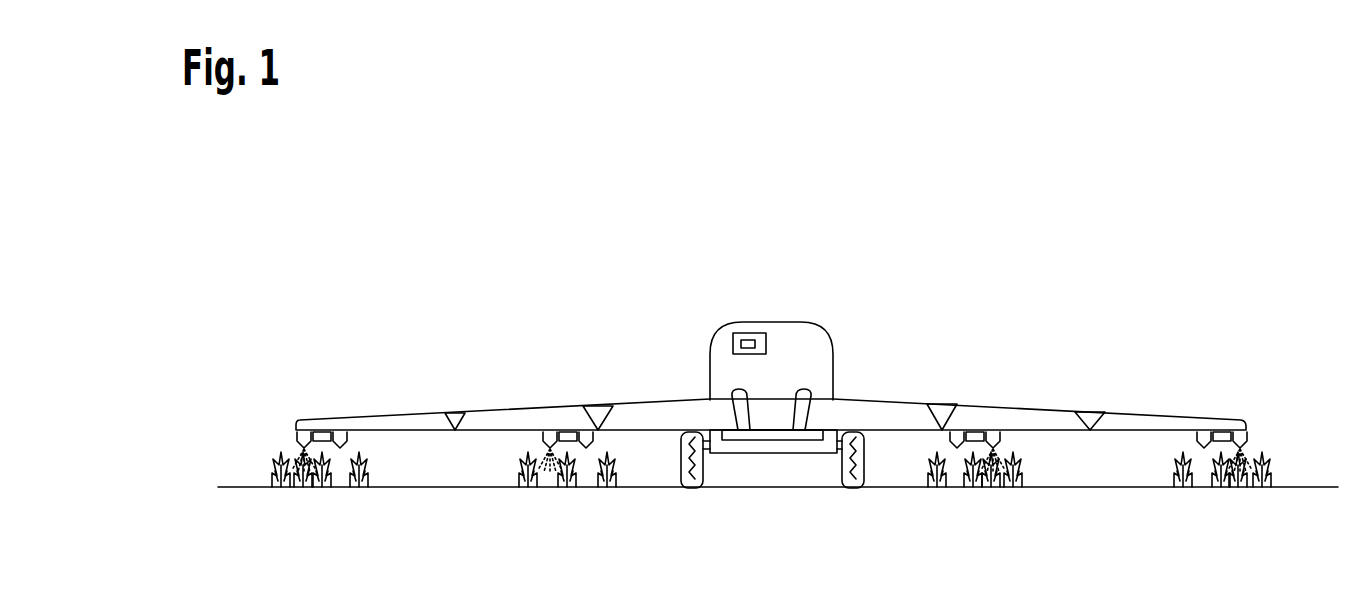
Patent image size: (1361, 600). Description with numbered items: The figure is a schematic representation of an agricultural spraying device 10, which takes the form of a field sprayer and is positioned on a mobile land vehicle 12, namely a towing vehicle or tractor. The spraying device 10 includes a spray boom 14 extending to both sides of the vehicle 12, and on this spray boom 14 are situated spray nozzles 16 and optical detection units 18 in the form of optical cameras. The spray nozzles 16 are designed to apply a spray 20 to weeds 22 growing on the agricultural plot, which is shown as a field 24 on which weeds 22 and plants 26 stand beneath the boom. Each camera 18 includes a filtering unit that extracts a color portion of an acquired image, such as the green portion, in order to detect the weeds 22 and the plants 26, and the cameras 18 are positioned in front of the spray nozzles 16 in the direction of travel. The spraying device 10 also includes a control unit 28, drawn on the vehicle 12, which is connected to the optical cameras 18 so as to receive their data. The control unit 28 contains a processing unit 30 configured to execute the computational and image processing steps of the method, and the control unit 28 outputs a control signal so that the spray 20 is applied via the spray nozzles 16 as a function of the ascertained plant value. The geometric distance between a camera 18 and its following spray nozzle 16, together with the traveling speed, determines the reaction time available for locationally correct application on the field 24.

The agricultural spraying device 10 is at (1092, 337).
The mobile land vehicle 12 is at (795, 322).
The spray boom 14 is at (519, 408).
The spray nozzles 16 is at (1250, 447).
The optical detection units 18 is at (1219, 432).
The spray 20 is at (1253, 445).
The weeds 22 is at (1246, 470).
The field 24 is at (1085, 488).
The plants 26 is at (1270, 460).
The control unit 28 is at (747, 333).
The processing unit 30 is at (741, 344).